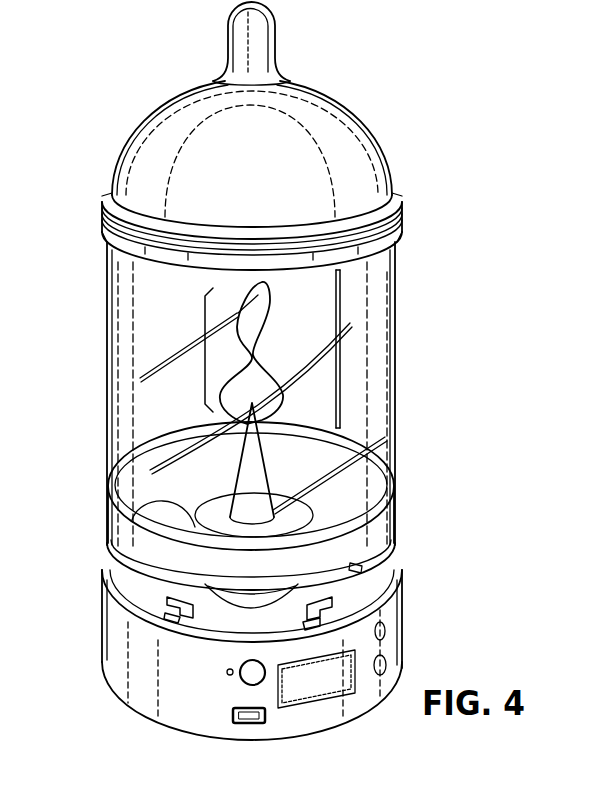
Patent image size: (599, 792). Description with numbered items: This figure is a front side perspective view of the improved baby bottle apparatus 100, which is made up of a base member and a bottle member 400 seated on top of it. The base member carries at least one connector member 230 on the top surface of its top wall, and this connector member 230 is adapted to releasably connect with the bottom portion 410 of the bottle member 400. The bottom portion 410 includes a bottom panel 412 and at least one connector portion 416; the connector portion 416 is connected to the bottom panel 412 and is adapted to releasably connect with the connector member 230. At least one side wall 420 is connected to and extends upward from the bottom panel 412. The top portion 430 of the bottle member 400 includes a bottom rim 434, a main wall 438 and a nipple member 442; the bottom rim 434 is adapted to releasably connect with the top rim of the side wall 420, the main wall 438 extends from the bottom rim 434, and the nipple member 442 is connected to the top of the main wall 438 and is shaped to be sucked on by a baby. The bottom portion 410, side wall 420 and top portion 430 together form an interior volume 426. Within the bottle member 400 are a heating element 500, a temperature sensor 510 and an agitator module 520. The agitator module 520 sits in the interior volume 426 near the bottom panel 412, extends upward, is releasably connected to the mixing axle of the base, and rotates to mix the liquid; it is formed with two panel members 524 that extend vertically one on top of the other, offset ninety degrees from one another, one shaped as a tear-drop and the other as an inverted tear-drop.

The improved baby bottle apparatus 100 is at (489, 153).
The connector member 230 is at (384, 632).
The bottle member 400 is at (395, 335).
The bottom portion 410 is at (375, 528).
The bottom panel 412 is at (376, 565).
The connector portion 416 is at (110, 567).
The side wall 420 is at (387, 393).
The interior volume 426 is at (155, 322).
The top portion 430 is at (107, 230).
The bottom rim 434 is at (402, 226).
The main wall 438 is at (383, 177).
The nipple member 442 is at (268, 50).
The heating element 500 is at (117, 517).
The temperature sensor 510 is at (341, 318).
The agitator module 520 is at (385, 468).
The panel members 524 is at (180, 343).